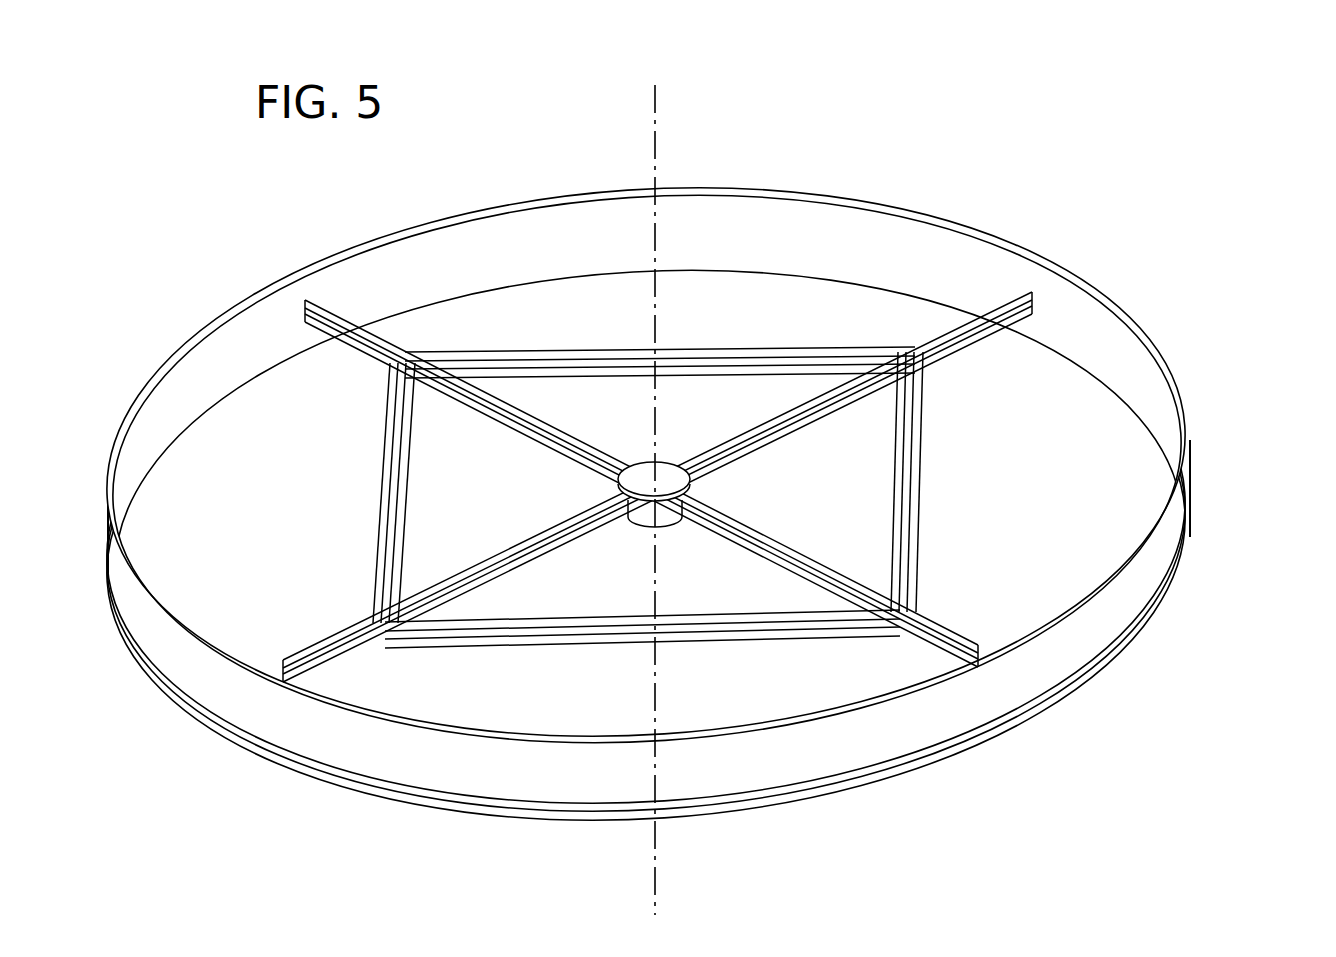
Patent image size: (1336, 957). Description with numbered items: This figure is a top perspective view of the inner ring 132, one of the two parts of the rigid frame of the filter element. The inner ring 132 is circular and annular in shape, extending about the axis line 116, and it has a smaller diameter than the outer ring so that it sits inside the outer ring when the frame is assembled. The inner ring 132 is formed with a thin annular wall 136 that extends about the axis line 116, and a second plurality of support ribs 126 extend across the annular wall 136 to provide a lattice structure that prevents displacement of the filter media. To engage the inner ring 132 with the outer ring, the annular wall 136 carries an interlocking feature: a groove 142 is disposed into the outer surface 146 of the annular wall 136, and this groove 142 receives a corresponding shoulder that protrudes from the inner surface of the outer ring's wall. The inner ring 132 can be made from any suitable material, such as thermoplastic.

The axis line 116 is at (652, 140).
The second plurality of support ribs 126 is at (817, 395).
The inner ring 132 is at (691, 500).
The annular wall 136 is at (1112, 337).
The groove 142 is at (1083, 680).
The outer surface 146 is at (1183, 511).